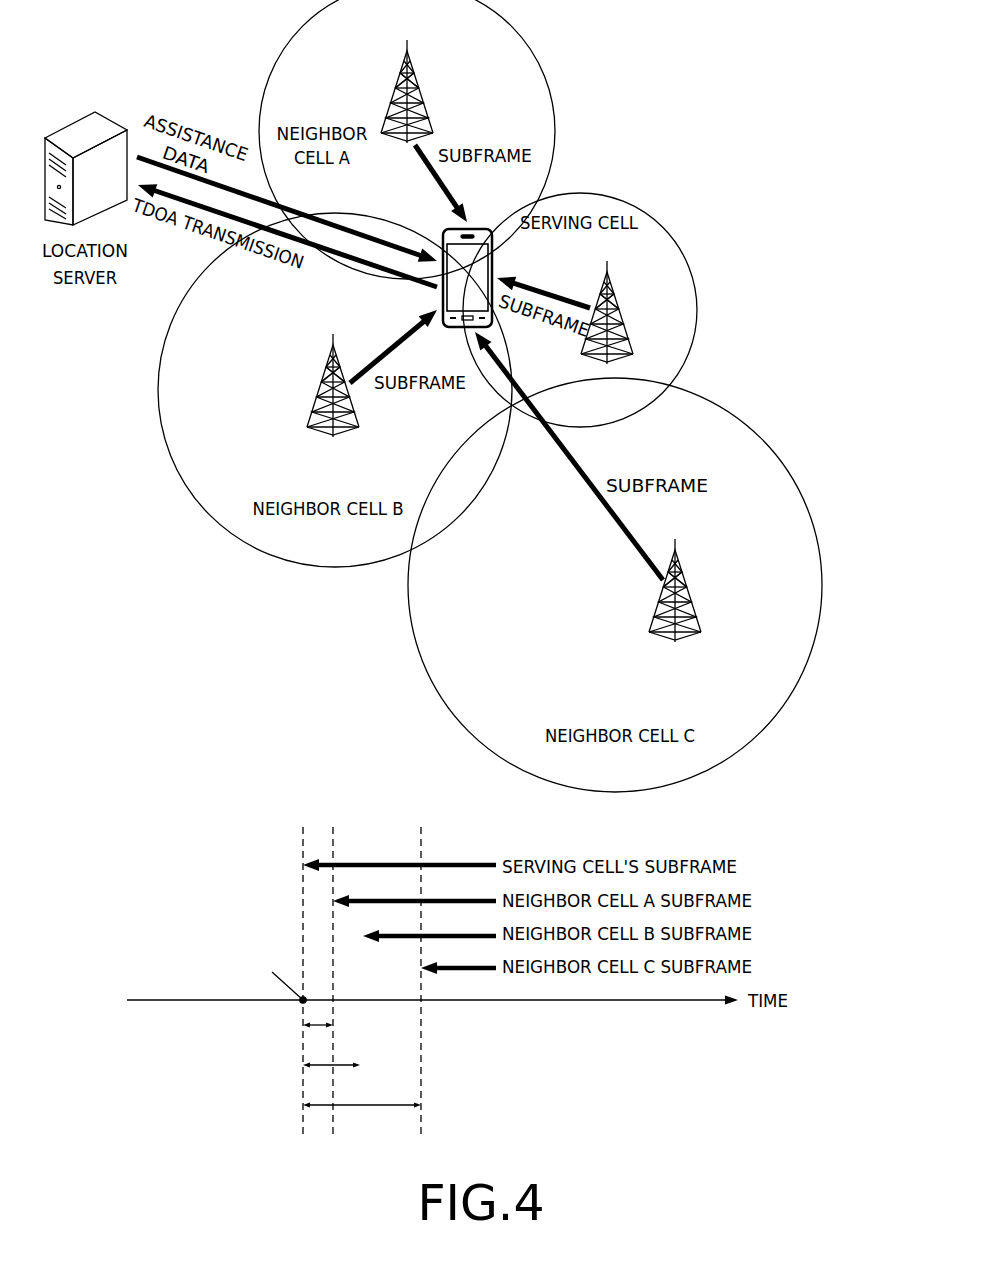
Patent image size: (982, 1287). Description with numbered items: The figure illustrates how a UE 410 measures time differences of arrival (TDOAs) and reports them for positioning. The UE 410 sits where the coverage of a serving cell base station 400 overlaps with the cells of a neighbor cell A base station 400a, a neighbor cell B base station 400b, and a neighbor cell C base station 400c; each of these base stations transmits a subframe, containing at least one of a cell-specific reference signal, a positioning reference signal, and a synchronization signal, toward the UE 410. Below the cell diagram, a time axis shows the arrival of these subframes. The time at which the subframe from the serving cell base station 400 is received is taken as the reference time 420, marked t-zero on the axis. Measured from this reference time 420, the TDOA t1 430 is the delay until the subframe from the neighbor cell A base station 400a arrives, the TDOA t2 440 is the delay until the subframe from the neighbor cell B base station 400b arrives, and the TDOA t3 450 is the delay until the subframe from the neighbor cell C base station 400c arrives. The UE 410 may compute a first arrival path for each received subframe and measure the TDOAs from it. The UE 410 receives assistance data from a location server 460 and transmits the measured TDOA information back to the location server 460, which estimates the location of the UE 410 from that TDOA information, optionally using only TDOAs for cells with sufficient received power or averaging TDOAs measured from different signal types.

The serving cell base station 400 is at (617, 305).
The neighbor cell A base station 400a is at (420, 93).
The neighbor cell B base station 400b is at (318, 387).
The neighbor cell C base station 400c is at (687, 587).
The UE 410 is at (480, 226).
The reference time 420 is at (249, 963).
The TDOA t1 430 is at (303, 1025).
The TDOA t2 440 is at (303, 1065).
The TDOA t3 450 is at (303, 1105).
The location server 460 is at (95, 112).